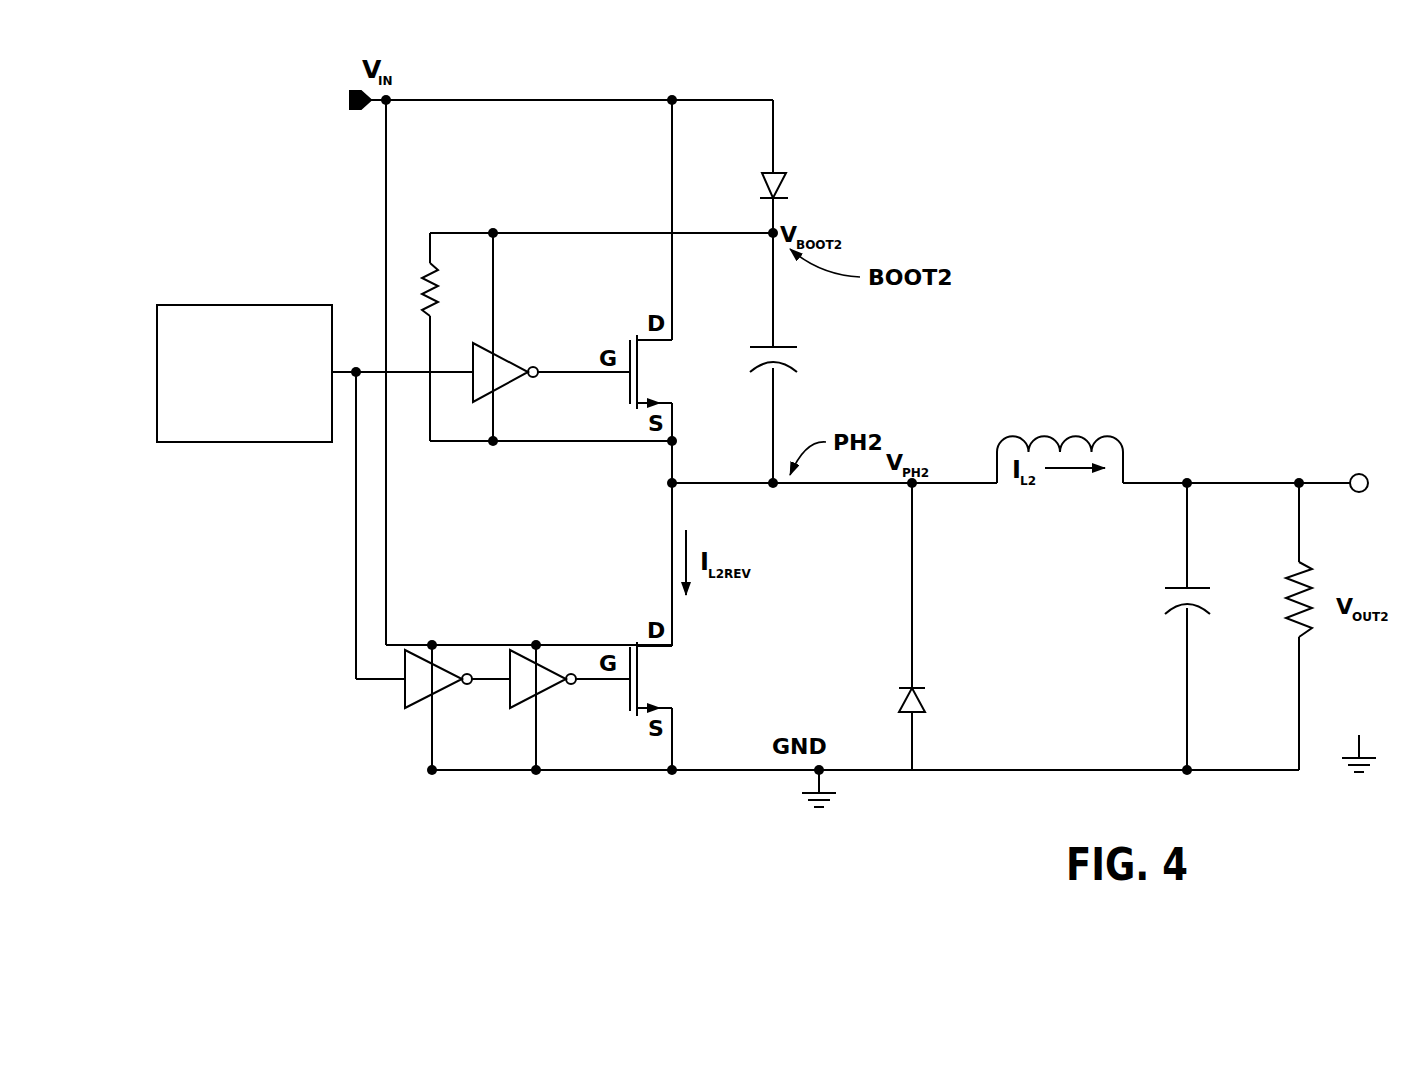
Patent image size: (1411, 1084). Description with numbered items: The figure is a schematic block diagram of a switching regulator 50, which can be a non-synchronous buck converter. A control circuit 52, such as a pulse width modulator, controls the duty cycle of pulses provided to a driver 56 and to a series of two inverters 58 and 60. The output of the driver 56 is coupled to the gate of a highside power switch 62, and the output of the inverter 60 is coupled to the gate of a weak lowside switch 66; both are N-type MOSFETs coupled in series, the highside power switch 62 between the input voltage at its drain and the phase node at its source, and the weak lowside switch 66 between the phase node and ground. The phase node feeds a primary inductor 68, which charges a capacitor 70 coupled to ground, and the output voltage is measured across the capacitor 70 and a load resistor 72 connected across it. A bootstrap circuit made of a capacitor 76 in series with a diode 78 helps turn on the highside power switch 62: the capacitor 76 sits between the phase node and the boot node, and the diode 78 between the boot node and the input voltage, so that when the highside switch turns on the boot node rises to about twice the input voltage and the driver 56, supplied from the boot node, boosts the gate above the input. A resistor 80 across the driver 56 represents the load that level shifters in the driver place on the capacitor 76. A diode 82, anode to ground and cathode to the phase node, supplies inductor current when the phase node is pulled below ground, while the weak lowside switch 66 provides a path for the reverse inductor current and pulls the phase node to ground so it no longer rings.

The switching regulator 50 is at (1115, 185).
The control circuit 52 is at (262, 305).
The driver 56 is at (522, 326).
The inverter 58 is at (440, 633).
The inverter 60 is at (545, 648).
The highside power switch 62 is at (658, 378).
The weak lowside switch 66 is at (675, 672).
The primary inductor 68 is at (1053, 425).
The capacitor 70 is at (1155, 590).
The load resistor 72 is at (1283, 563).
The capacitor 76 is at (813, 358).
The diode 78 is at (808, 178).
The resistor 80 is at (415, 268).
The diode 82 is at (950, 676).